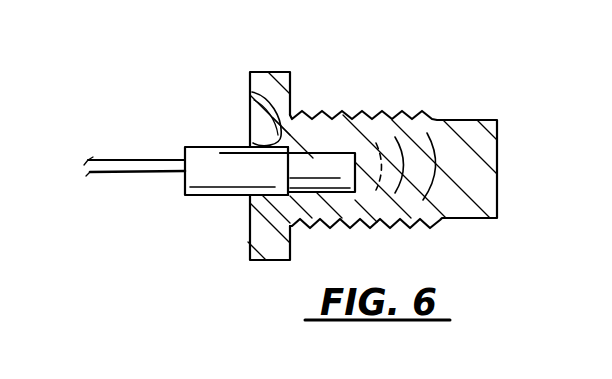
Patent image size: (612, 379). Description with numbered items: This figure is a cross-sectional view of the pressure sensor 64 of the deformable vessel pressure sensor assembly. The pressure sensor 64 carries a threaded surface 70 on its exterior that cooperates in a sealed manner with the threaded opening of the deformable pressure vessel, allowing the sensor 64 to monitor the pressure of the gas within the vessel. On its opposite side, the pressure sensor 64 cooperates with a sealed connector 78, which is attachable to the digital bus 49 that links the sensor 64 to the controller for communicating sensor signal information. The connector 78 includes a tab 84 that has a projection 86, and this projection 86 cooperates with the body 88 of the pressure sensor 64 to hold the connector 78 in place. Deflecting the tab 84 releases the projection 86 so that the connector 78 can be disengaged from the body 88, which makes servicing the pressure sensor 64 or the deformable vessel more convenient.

The digital bus 49 is at (127, 158).
The sealed connector 78 is at (187, 196).
The tab 84 is at (223, 147).
The projection 86 is at (253, 92).
The body 88 is at (274, 70).
The threaded surface 70 is at (398, 112).
The pressure sensor 64 is at (322, 153).